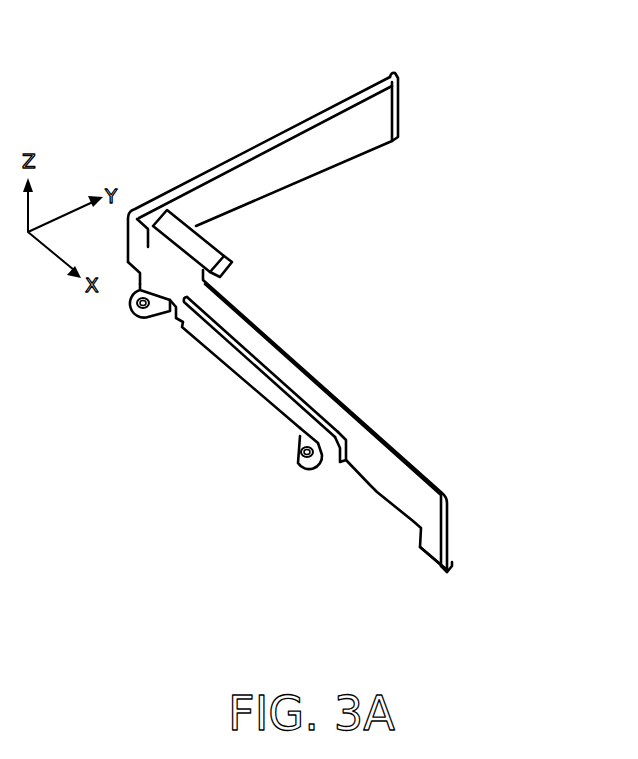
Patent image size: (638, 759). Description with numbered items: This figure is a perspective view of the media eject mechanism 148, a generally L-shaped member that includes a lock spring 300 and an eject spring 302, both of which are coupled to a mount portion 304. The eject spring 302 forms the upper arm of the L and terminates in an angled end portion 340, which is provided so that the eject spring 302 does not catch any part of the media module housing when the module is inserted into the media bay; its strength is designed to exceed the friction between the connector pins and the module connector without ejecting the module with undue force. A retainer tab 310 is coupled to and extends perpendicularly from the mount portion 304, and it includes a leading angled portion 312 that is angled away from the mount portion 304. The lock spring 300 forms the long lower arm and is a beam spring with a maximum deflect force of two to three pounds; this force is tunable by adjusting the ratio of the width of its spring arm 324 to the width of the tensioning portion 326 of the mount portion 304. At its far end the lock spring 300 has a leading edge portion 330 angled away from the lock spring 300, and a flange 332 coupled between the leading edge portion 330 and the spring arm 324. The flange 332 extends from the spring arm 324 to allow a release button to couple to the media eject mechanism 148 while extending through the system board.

The media eject mechanism 148 is at (486, 262).
The lock spring 300 is at (375, 493).
The eject spring 302 is at (288, 130).
The mount portion 304 is at (170, 314).
The retainer tab 310 is at (218, 249).
The leading angled portion 312 is at (235, 273).
The spring arm 324 is at (300, 363).
The tensioning portion 326 is at (277, 409).
The leading edge portion 330 is at (449, 530).
The flange 332 is at (422, 551).
The angled end portion 340 is at (392, 77).